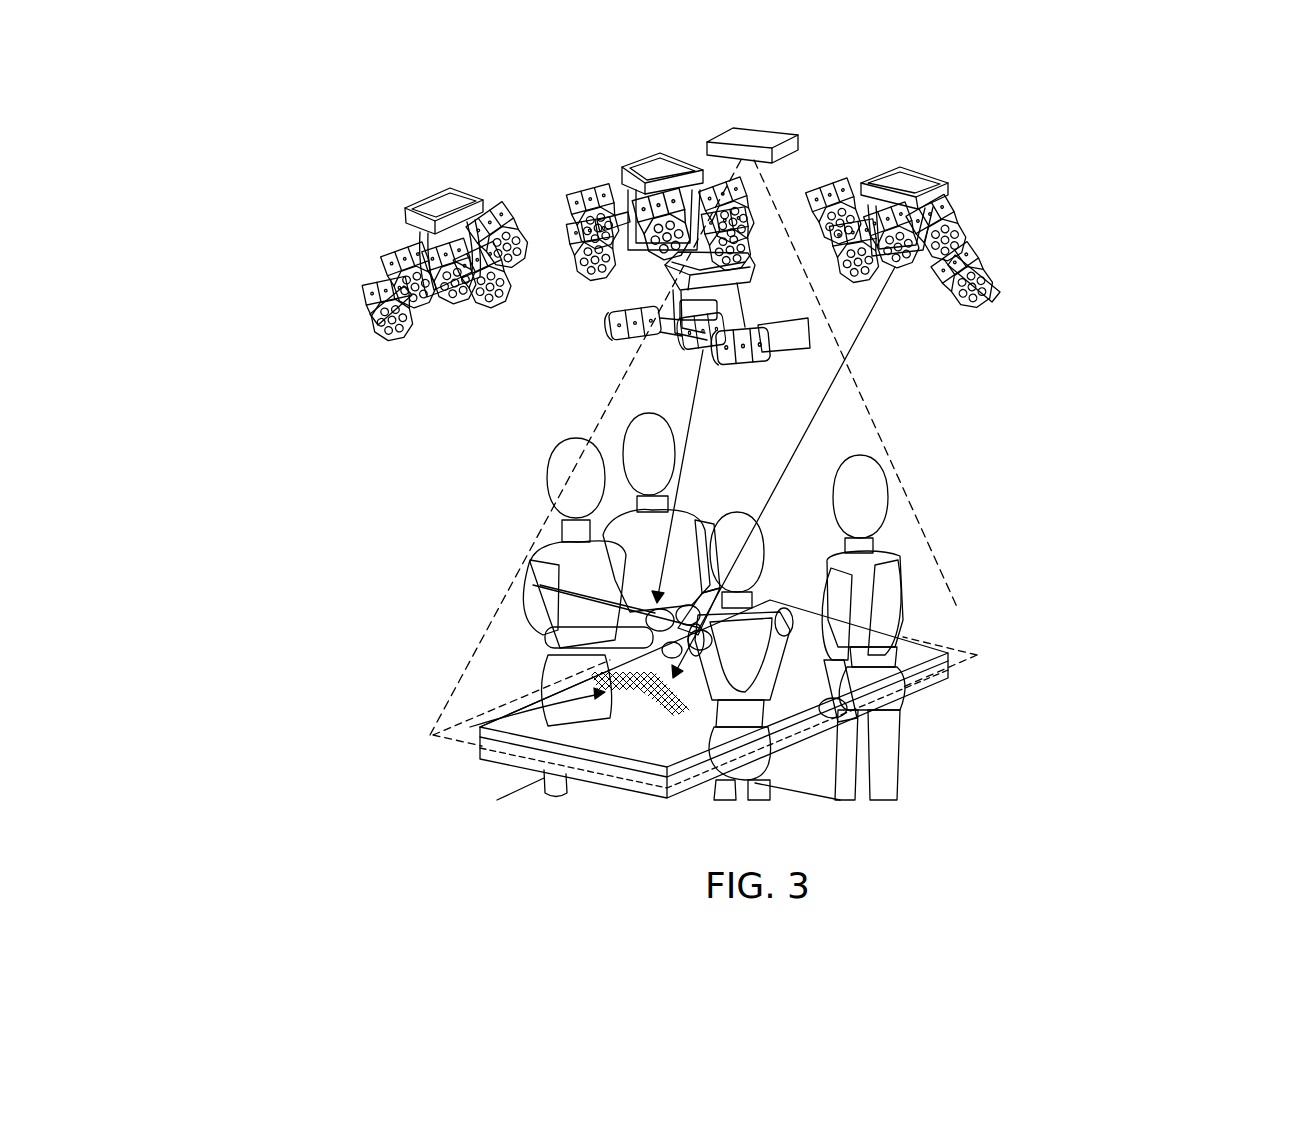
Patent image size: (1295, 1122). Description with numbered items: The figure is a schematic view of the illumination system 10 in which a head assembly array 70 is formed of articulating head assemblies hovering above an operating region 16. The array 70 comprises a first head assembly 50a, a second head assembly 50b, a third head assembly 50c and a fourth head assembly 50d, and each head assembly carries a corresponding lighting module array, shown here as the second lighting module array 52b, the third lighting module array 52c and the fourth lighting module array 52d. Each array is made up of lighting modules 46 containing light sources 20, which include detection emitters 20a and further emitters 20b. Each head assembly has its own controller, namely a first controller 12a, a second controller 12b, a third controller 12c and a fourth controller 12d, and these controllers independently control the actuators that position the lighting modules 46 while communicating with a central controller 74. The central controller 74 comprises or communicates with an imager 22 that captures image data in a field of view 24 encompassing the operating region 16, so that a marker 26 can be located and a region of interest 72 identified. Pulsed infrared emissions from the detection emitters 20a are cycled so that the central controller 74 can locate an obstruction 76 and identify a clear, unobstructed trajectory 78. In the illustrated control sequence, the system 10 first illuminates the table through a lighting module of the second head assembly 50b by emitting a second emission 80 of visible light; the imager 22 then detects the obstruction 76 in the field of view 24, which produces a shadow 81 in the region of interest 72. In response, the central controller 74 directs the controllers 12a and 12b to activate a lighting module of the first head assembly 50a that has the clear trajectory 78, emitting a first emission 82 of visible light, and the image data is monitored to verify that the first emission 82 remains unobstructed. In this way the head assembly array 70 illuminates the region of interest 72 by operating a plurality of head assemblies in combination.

The illumination system 10 is at (736, 458).
The head assembly array 70 is at (1132, 132).
The first controller 12a is at (893, 152).
The second controller 12b is at (739, 283).
The third controller 12c is at (430, 177).
The fourth controller 12d is at (663, 147).
The operating region 16 is at (686, 721).
The light sources 20 is at (949, 291).
The detection emitters 20a is at (949, 291).
The second light source 20b is at (895, 264).
The imager 22 is at (750, 118).
The field of view 24 is at (935, 546).
The marker 26 is at (470, 735).
The lighting modules 46 is at (400, 335).
The first head assembly 50a is at (980, 213).
The second head assembly 50b is at (655, 338).
The third head assembly 50c is at (369, 273).
The fourth head assembly 50d is at (606, 216).
The second lighting module array 52b is at (665, 339).
The third lighting module array 52c is at (368, 266).
The fourth lighting module array 52d is at (610, 186).
The region of interest 72 is at (473, 720).
The central controller 74 is at (740, 127).
The obstruction 76 is at (533, 585).
The unobstructed trajectory 78 is at (845, 372).
The second emission 80 is at (700, 375).
The shadow 81 is at (650, 676).
The first emission 82 is at (806, 430).